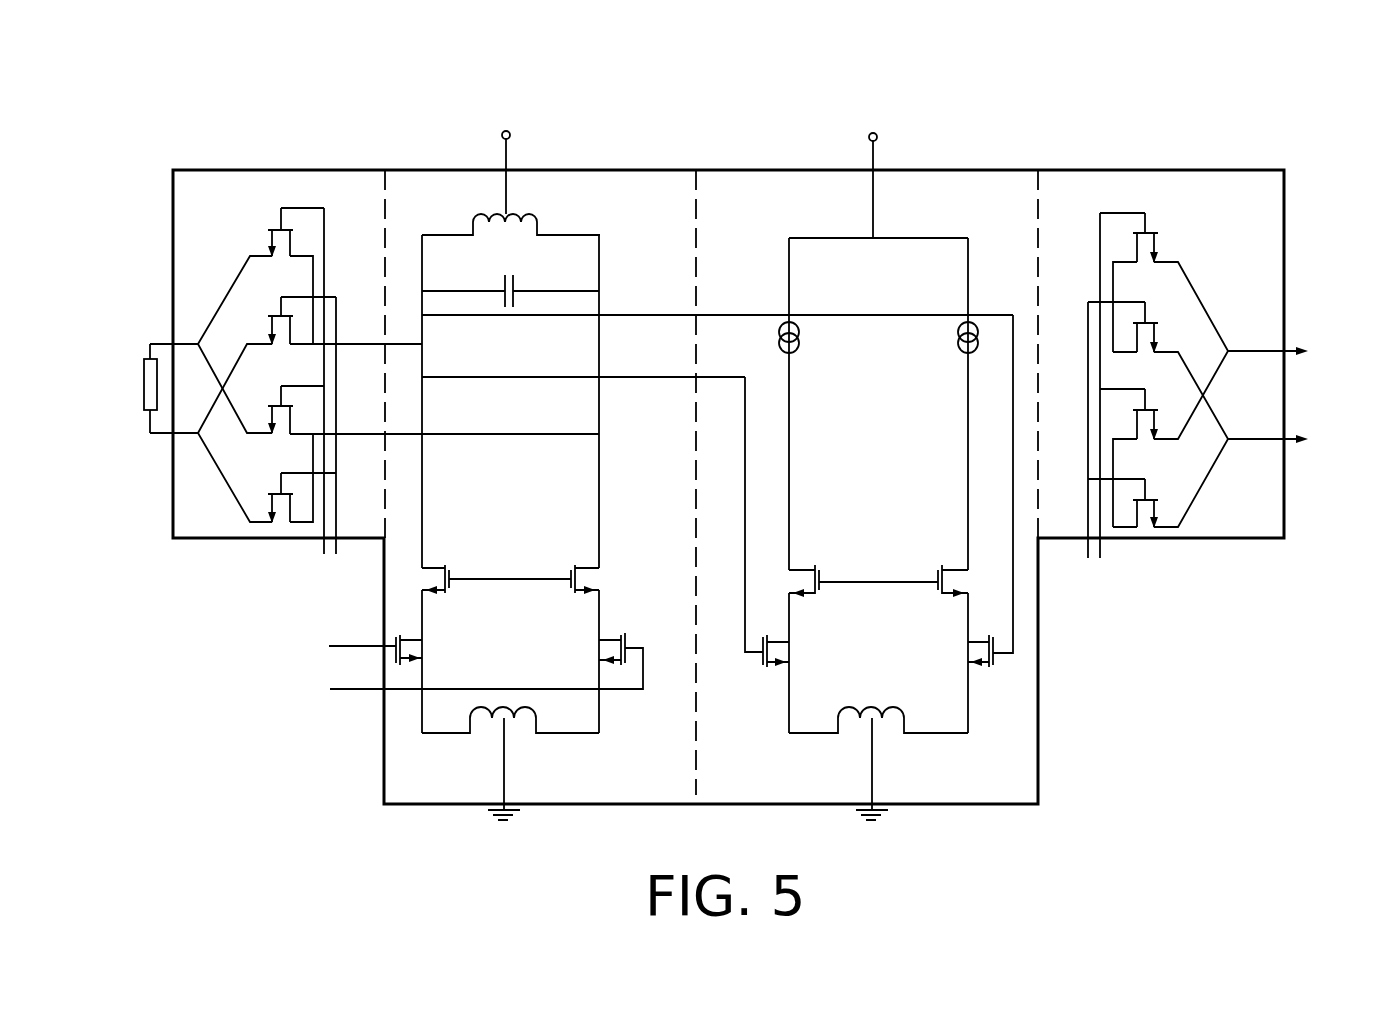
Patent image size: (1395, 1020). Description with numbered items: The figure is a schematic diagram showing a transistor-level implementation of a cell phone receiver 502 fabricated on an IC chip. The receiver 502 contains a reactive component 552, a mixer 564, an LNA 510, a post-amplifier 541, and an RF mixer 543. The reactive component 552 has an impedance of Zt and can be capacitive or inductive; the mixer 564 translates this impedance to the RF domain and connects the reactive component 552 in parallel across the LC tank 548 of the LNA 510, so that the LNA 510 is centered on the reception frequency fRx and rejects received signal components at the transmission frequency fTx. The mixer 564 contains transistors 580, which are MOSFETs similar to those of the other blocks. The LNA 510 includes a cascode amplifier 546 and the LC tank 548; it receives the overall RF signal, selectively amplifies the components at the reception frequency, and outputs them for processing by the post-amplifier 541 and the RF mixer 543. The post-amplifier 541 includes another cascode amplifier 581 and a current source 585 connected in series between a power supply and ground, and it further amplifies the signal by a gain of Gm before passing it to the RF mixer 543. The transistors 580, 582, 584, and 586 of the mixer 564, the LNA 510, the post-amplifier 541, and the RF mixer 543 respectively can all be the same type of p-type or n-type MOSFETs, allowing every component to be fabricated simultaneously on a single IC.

The cell phone receiver 502 is at (745, 55).
The mixer 564 is at (263, 357).
The LNA 510 is at (625, 482).
The post-amplifier 541 is at (922, 455).
The RF mixer 543 is at (1206, 355).
The LC tank 548 is at (599, 223).
The reactive component 552 is at (145, 335).
The transistors 580 is at (272, 230).
The transistors 582 is at (445, 566).
The transistors 584 is at (1095, 629).
The current source 585 is at (962, 348).
The transistors 586 is at (1155, 250).
The cascode amplifier 546 is at (602, 770).
The cascode amplifier 581 is at (786, 762).